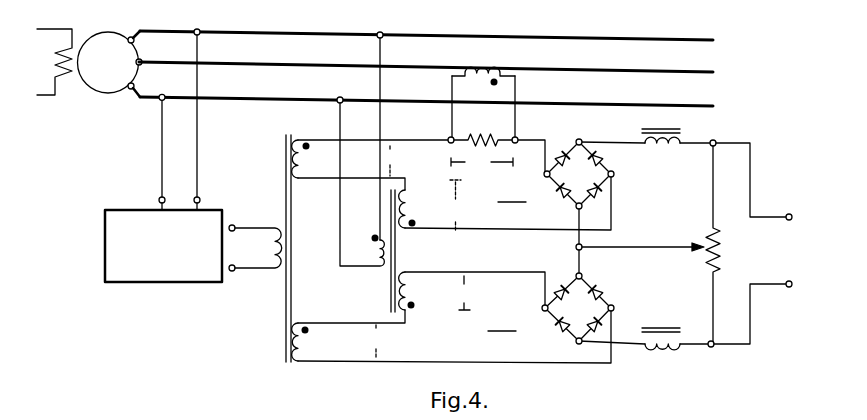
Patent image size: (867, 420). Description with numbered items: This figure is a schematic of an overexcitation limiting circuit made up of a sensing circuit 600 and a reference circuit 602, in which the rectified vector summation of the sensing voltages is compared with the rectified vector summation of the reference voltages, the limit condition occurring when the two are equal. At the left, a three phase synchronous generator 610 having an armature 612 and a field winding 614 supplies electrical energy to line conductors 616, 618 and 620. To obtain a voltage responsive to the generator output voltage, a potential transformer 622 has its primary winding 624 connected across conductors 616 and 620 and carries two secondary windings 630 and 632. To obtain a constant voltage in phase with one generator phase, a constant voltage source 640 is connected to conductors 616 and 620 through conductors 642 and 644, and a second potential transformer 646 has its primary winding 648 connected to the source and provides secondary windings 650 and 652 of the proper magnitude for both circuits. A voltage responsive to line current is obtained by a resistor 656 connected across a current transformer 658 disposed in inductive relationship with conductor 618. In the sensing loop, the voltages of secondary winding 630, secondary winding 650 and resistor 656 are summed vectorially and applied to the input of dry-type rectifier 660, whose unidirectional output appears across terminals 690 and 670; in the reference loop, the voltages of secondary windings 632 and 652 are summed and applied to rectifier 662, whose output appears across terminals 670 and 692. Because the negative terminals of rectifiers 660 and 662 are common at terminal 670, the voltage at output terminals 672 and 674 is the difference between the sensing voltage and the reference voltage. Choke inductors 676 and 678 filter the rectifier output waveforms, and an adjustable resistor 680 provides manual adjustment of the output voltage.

The sensing circuit 600 is at (455, 187).
The reference circuit 602 is at (442, 317).
The synchronous generator 610 is at (122, 22).
The armature 612 is at (104, 91).
The field winding 614 is at (55, 63).
The generator line conductor 616 is at (672, 39).
The generator line conductor 618 is at (672, 71).
The generator line conductor 620 is at (672, 105).
The potential transformer 622 is at (391, 287).
The primary winding 624 is at (378, 259).
The secondary winding 630 is at (407, 209).
The secondary winding 632 is at (407, 295).
The constant voltage source 640 is at (180, 283).
The conductor 642 is at (197, 166).
The conductor 644 is at (160, 155).
The potential transformer 646 is at (286, 187).
The primary winding 648 is at (272, 250).
The secondary winding 650 is at (300, 163).
The secondary winding 652 is at (300, 343).
The resistor 656 is at (484, 138).
The current transformer 658 is at (487, 66).
The rectifier 660 is at (591, 183).
The rectifier 662 is at (591, 317).
The terminal 670 is at (576, 248).
The output terminal 672 is at (786, 214).
The output terminal 674 is at (786, 288).
The choke inductor 676 is at (650, 128).
The choke inductor 678 is at (662, 330).
The adjustable resistor 680 is at (705, 240).
The terminal 690 is at (716, 142).
The terminal 692 is at (711, 347).